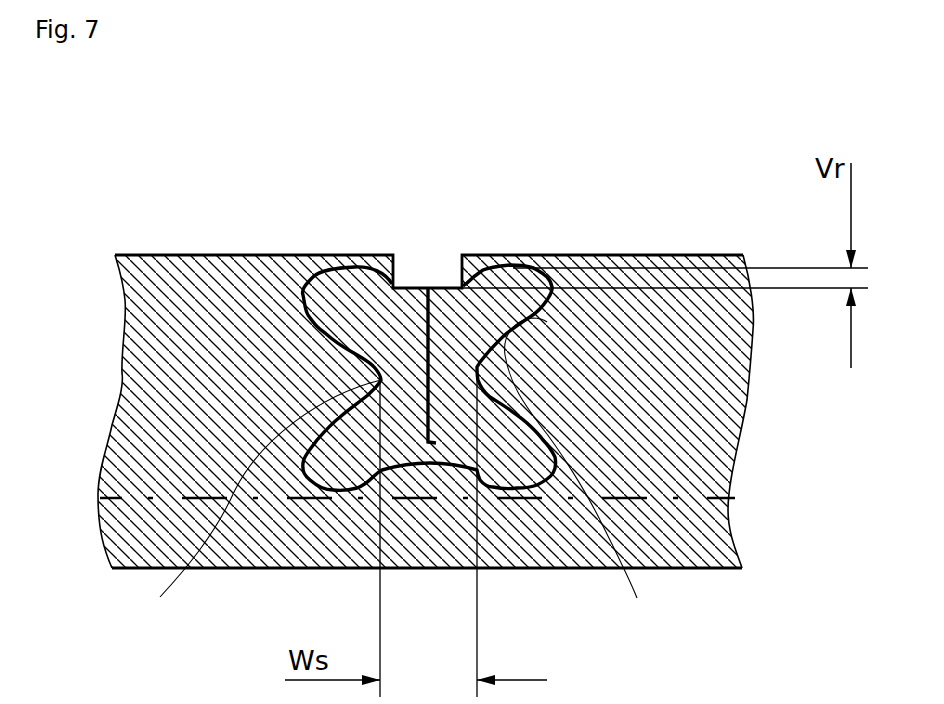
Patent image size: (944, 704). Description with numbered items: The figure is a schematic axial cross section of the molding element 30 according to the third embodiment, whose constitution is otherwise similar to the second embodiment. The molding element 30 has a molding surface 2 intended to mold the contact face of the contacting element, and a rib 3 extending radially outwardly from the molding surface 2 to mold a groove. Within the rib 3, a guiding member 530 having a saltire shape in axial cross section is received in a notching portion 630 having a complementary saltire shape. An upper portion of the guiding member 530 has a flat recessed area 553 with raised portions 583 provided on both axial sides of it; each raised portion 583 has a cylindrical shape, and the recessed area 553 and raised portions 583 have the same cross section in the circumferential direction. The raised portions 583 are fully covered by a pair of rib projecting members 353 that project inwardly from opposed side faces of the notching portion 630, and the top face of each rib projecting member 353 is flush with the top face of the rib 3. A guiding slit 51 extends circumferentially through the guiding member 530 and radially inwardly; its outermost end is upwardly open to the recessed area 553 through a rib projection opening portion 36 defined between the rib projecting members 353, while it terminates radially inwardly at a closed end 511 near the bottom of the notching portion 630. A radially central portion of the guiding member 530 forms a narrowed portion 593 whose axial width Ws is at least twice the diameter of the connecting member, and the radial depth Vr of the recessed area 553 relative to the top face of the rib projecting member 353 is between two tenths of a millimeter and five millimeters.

The molding element 30 is at (152, 208).
The rib 3 is at (664, 263).
The molding surface 2 is at (714, 498).
The rib projection opening portion 36 is at (446, 283).
The rib projecting member 353 is at (372, 266).
The flat recessed area 553 is at (420, 279).
The raised portion 583 is at (349, 272).
The guiding slit 51 is at (417, 397).
The closed end 511 is at (430, 442).
The guiding member 530 is at (380, 466).
The narrowed portion 593 is at (254, 504).
The notching portion 630 is at (587, 476).